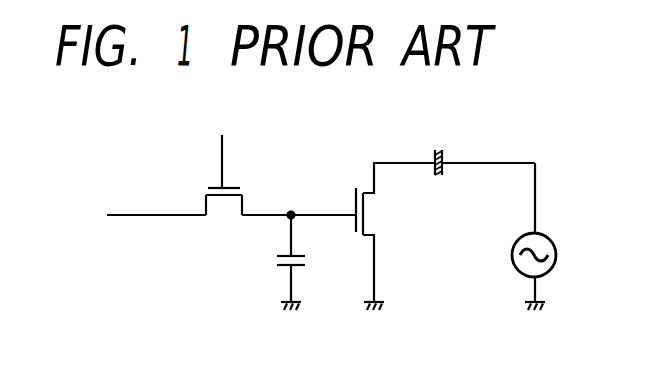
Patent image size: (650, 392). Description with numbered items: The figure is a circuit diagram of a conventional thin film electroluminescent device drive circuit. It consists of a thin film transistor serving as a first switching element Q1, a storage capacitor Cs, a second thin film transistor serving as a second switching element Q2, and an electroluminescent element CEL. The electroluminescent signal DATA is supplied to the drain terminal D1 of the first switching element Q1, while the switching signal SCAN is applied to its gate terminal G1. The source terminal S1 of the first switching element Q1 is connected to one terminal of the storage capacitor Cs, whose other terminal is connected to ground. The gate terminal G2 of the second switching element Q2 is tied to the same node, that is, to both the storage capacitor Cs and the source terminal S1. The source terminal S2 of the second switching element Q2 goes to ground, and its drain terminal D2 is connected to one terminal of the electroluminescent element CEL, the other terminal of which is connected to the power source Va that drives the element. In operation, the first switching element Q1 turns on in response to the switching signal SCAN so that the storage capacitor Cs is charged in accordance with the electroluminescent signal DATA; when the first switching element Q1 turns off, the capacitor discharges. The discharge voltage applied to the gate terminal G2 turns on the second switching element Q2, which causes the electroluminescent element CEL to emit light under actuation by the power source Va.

The electroluminescent signal DATA is at (124, 215).
The switching signal SCAN is at (220, 147).
The first switching element Q1 is at (223, 206).
The drain terminal of the first switching element D1 is at (192, 196).
The gate terminal of the first switching element G1 is at (229, 175).
The source terminal of the first switching element S1 is at (255, 201).
The storage capacitor Cs is at (279, 262).
The second switching element Q2 is at (380, 236).
The gate terminal of the second switching element G2 is at (340, 210).
The drain terminal of the second switching element D2 is at (392, 177).
The source terminal of the second switching element S2 is at (367, 272).
The electroluminescent element CEL is at (479, 149).
The power source Va is at (547, 236).